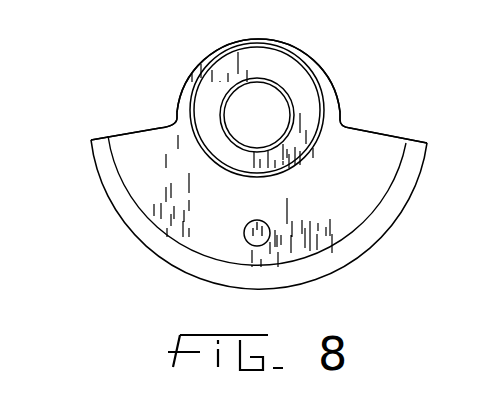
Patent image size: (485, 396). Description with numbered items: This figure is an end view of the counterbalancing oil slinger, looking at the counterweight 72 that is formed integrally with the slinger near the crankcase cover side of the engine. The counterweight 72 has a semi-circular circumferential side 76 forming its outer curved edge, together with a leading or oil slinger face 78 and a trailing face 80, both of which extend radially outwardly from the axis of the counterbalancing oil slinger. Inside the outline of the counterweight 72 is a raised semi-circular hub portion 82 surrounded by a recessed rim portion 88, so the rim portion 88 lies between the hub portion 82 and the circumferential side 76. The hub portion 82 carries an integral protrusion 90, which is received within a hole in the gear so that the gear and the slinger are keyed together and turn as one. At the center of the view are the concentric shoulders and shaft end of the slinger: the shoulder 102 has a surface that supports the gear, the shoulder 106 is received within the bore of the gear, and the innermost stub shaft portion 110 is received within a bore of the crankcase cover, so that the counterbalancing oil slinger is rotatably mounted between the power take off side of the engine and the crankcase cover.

The counterweight 72 is at (110, 239).
The semi-circular circumferential side 76 is at (337, 270).
The leading or oil slinger face 78 is at (140, 131).
The trailing face 80 is at (375, 132).
The raised semi-circular hub portion 82 is at (340, 203).
The recessed rim portion 88 is at (377, 223).
The protrusion 90 is at (250, 237).
The shoulder 102 is at (314, 48).
The shoulder 106 is at (317, 77).
The stub shaft portion 110 is at (275, 124).